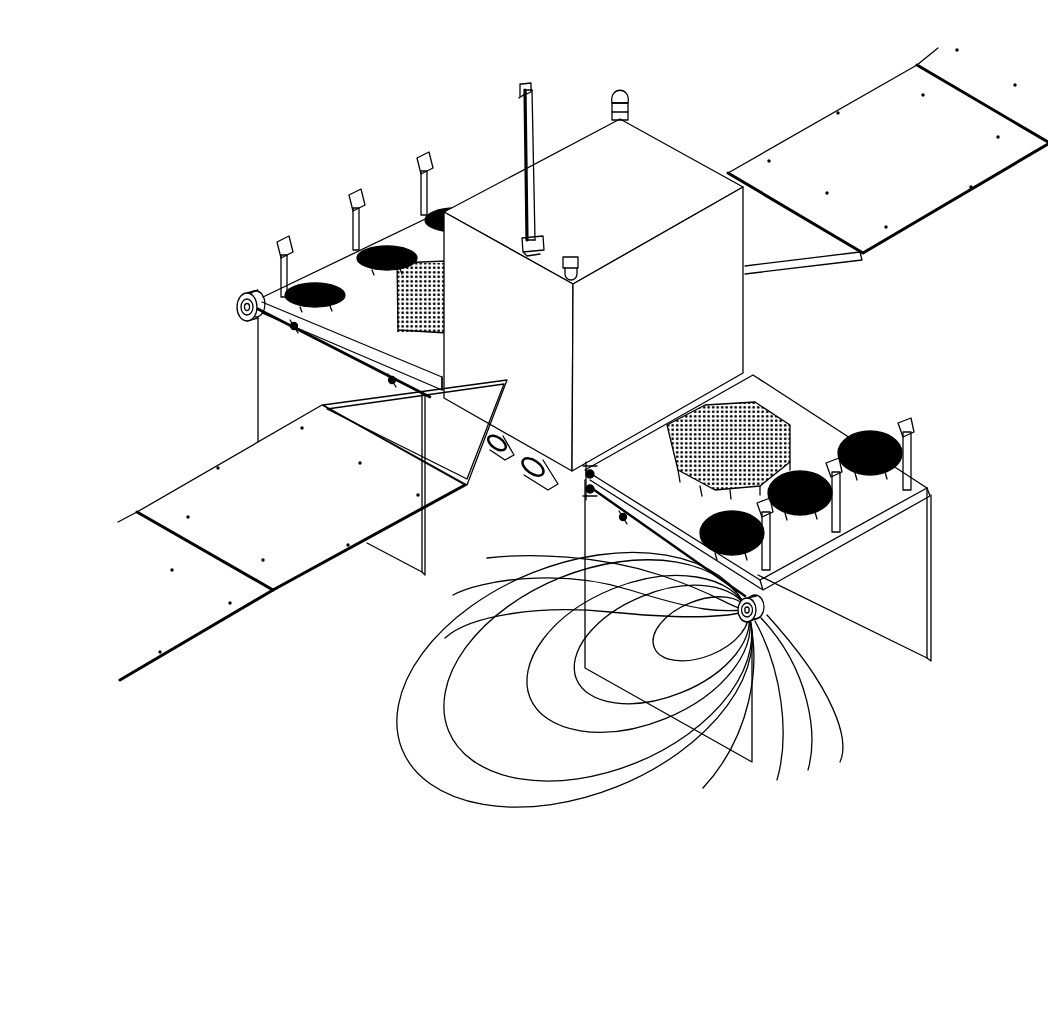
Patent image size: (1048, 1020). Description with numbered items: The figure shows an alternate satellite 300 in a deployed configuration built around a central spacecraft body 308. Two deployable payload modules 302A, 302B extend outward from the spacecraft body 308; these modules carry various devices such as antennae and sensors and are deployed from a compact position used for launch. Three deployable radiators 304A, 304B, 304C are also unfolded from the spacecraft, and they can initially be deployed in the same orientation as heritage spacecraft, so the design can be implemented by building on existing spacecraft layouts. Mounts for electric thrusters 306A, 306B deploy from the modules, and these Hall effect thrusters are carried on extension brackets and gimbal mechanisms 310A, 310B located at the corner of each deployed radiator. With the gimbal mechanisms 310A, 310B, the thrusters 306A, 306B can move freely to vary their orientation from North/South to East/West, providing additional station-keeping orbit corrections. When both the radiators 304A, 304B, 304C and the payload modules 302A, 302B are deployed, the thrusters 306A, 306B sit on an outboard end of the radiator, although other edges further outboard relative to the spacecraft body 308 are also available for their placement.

The satellite 300 is at (697, 52).
The deployable payload module 302A is at (822, 427).
The deployable payload module 302B is at (327, 265).
The deployable radiator 304A is at (598, 545).
The deployable radiator 304B is at (917, 564).
The deployable radiator 304C is at (273, 367).
The electric thruster 306A is at (757, 612).
The electric thruster 306B is at (244, 298).
The spacecraft body 308 is at (736, 347).
The gimbal mechanism 310A is at (760, 594).
The gimbal mechanism 310B is at (265, 302).